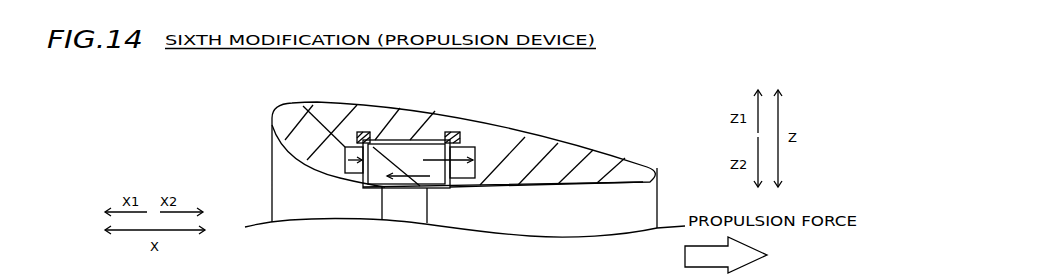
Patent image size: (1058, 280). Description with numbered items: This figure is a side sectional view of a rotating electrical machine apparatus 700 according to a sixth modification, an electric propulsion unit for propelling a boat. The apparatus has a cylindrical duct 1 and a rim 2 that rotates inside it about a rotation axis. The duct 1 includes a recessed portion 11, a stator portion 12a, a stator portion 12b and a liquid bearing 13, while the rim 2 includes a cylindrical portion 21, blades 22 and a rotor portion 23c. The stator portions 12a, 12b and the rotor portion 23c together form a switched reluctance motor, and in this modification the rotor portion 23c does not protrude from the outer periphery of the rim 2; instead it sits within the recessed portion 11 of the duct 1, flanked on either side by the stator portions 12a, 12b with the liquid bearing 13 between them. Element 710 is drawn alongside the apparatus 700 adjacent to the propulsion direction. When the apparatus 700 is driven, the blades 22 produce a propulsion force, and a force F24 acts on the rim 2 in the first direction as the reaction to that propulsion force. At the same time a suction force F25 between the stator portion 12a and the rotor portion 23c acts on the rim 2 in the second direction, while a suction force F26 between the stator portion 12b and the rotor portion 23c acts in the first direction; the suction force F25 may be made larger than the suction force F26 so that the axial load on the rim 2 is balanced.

The duct 1 is at (461, 140).
The rim 2 is at (378, 188).
The recessed portion 11 is at (443, 190).
The stator portion 12a is at (477, 147).
The stator portion 12b is at (313, 105).
The liquid bearing 13 is at (365, 131).
The cylindrical portion 21 is at (374, 185).
The blades 22 is at (384, 222).
The rotor portion 23c is at (390, 138).
The rotating electrical machine apparatus 700 is at (541, 108).
The hull wall 710 is at (472, 193).
The force F24 is at (432, 188).
The suction force F25 is at (428, 160).
The suction force F26 is at (347, 166).